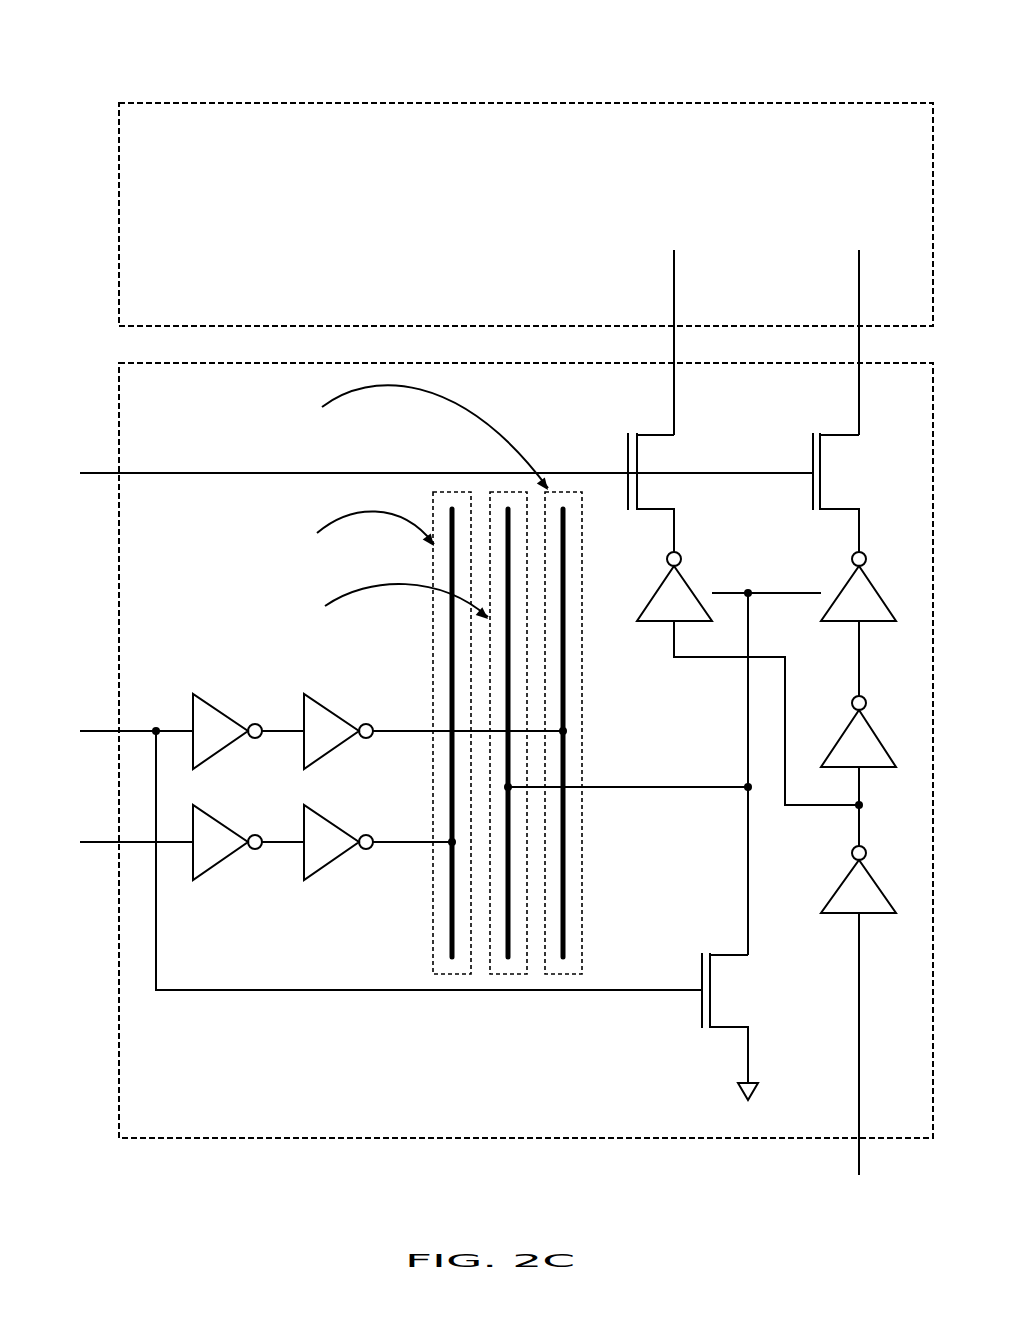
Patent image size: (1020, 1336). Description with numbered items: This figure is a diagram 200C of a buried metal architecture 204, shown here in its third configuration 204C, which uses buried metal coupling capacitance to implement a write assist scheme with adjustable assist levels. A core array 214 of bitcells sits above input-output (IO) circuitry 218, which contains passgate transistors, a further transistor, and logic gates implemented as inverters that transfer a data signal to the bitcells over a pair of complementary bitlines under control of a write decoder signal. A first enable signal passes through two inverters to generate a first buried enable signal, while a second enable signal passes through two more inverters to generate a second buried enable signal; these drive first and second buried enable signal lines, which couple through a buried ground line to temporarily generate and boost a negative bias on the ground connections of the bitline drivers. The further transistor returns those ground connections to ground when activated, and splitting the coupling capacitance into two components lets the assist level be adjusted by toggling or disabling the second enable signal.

The diagram 200C is at (106, 20).
The buried metal architecture 204 is at (607, 48).
The buried metal architecture 204C is at (655, 48).
The core array 214 is at (596, 160).
The input-output (IO) circuitry 218 is at (625, 1103).